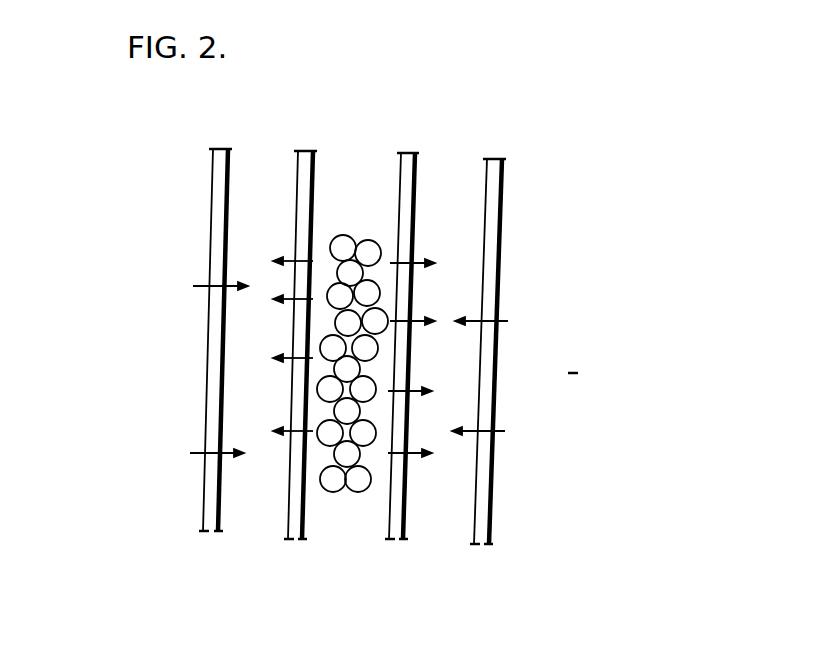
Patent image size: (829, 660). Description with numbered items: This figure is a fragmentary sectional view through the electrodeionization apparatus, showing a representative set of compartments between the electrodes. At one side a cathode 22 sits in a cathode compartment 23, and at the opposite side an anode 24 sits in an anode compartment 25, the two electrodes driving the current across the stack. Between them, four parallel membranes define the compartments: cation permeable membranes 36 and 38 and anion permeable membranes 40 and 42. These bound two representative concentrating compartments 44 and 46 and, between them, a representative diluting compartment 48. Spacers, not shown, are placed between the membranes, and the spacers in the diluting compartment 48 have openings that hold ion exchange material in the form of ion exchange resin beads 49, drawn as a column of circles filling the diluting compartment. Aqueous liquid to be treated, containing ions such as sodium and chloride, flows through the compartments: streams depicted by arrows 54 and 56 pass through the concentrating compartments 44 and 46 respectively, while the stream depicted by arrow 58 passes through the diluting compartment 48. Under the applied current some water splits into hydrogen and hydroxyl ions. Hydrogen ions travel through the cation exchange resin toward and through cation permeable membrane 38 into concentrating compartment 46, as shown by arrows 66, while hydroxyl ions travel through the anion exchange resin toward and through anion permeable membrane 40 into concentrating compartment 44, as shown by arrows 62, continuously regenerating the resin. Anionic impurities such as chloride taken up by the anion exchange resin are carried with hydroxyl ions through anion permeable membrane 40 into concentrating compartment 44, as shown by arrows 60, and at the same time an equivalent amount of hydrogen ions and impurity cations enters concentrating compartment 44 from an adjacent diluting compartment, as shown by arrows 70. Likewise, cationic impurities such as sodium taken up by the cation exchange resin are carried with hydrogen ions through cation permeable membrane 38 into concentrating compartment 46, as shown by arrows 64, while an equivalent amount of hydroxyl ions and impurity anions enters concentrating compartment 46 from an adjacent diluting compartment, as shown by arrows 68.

The cathode 22 is at (583, 396).
The cathode compartment 23 is at (580, 295).
The anode 24 is at (123, 392).
The anode compartment 25 is at (110, 287).
The cation permeable membrane 36 is at (222, 148).
The cation permeable membrane 38 is at (413, 152).
The anion permeable membrane 40 is at (311, 150).
The anion permeable membrane 42 is at (495, 158).
The concentrating compartment 44 is at (243, 190).
The concentrating compartment 46 is at (438, 192).
The diluting compartment 48 is at (335, 190).
The ion exchange resin beads 49 is at (370, 246).
The stream of liquid 54 is at (251, 516).
The stream of liquid 56 is at (439, 518).
The stream of liquid 58 is at (390, 412).
The arrows 60 is at (280, 412).
The arrows 62 is at (280, 299).
The arrows 64 is at (421, 439).
The arrows 66 is at (426, 308).
The arrows 68 is at (499, 393).
The arrows 70 is at (207, 353).